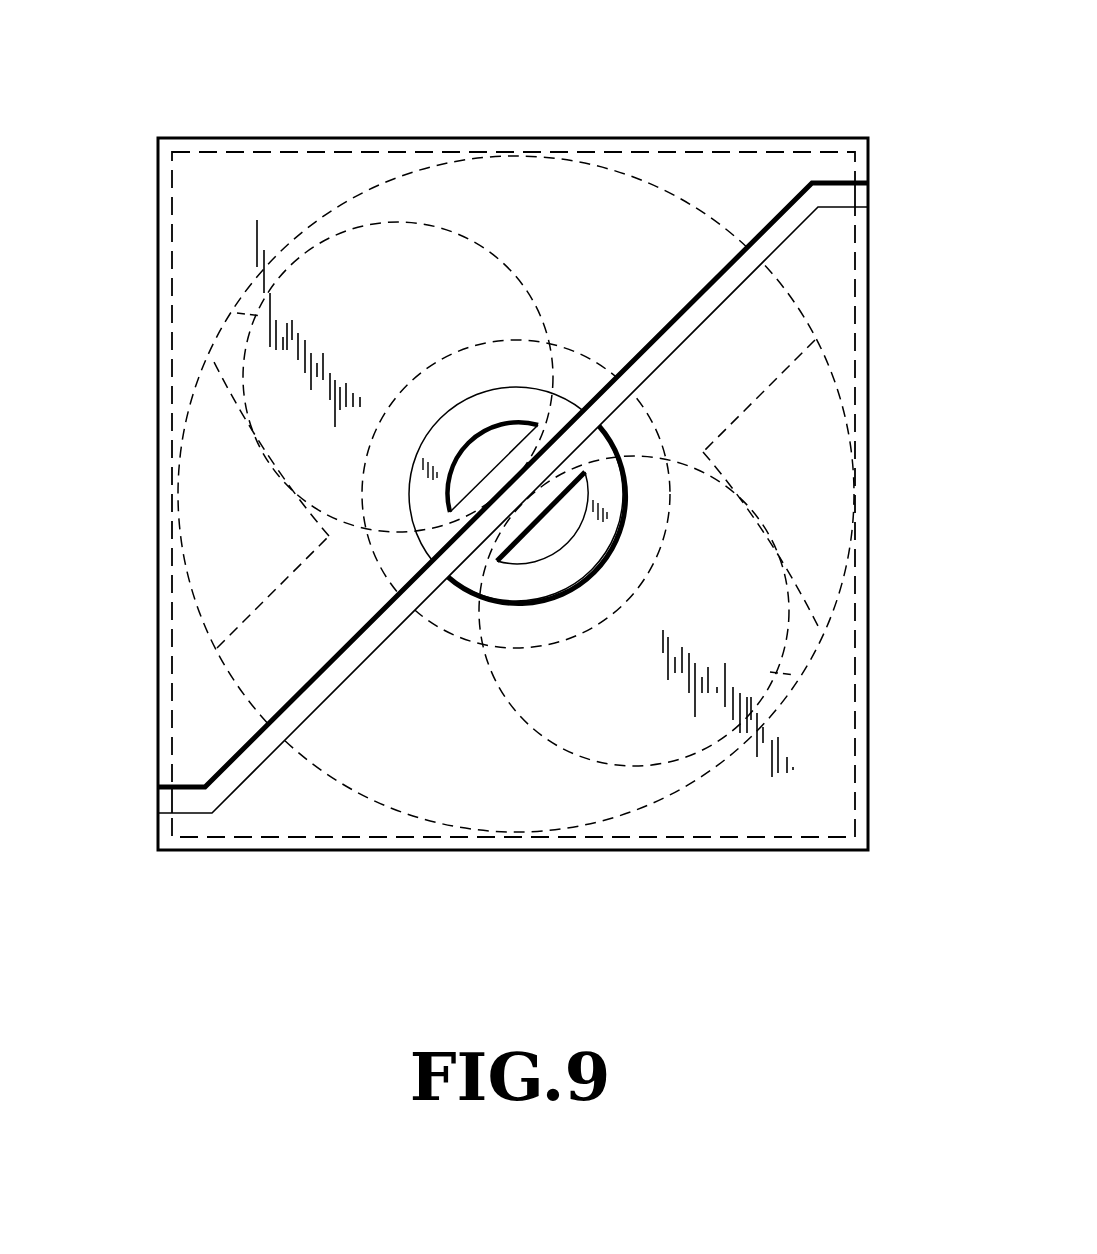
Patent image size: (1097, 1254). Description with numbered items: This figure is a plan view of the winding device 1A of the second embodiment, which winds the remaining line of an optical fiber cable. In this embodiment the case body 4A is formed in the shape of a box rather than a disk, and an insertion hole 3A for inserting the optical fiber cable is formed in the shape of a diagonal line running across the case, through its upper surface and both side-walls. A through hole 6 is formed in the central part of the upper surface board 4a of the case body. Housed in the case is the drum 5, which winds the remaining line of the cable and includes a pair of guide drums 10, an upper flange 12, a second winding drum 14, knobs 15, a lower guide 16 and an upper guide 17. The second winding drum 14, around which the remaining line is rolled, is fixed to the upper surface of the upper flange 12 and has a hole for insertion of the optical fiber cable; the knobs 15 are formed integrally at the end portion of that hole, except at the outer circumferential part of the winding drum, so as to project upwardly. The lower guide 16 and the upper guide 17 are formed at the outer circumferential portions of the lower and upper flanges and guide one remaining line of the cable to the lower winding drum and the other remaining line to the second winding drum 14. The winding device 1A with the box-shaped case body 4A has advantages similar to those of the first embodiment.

The winding device 1A is at (514, 488).
The insertion hole 3A is at (326, 673).
The case body 4A is at (791, 856).
The upper surface board 4a is at (610, 205).
The drum 5 is at (485, 158).
The through hole 6 is at (562, 586).
The guide drums 10 is at (683, 887).
The upper flange 12 is at (423, 807).
The second winding drum 14 is at (452, 647).
The knobs 15 is at (510, 460).
The lower guide 16 is at (208, 475).
The upper guide 17 is at (822, 519).